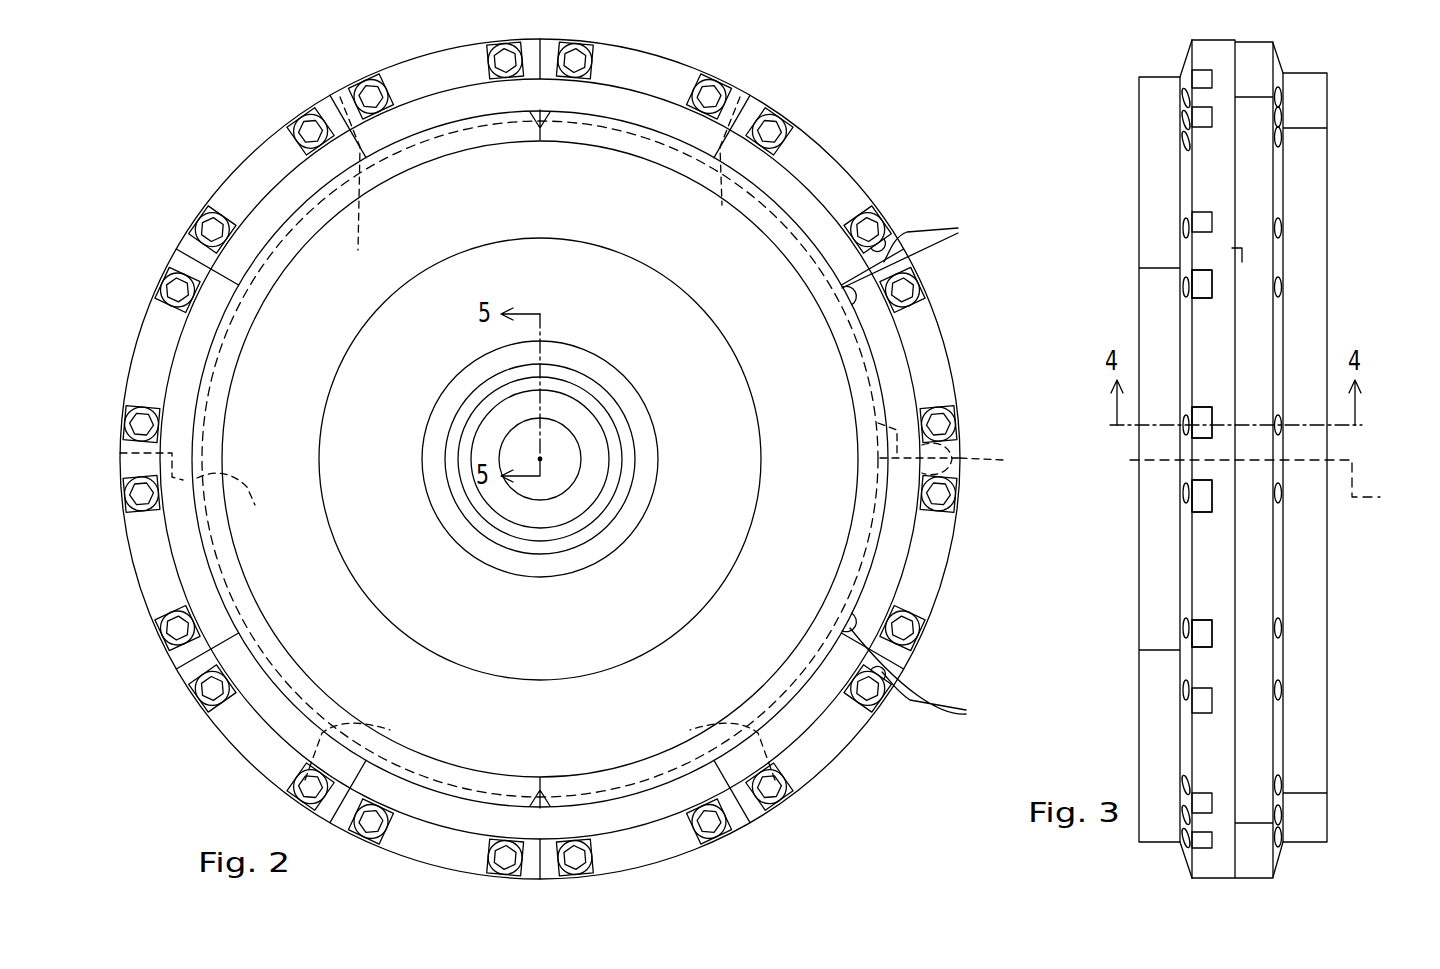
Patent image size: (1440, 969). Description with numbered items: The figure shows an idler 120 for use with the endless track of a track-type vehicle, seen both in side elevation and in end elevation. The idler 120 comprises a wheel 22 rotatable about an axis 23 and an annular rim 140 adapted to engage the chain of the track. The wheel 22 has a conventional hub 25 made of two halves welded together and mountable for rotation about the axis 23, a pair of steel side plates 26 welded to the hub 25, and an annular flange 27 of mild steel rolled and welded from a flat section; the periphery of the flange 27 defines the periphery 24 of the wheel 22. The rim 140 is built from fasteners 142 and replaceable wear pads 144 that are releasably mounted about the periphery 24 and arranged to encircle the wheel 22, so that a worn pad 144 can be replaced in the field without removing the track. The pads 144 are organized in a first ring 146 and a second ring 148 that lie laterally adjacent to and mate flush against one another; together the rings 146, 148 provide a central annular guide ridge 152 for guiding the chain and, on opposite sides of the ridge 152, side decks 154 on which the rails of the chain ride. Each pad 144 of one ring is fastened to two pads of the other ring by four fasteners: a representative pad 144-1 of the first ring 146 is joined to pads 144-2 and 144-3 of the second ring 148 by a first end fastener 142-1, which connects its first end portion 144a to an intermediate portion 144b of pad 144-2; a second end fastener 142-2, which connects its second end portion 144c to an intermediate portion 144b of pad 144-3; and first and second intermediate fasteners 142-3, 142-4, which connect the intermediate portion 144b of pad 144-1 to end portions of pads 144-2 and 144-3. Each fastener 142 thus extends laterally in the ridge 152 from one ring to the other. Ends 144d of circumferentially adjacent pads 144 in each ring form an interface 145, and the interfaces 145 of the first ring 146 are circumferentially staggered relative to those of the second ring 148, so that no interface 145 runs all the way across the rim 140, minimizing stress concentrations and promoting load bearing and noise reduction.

In FIG. 2, the wheel 22 is at (823, 541).
In FIG. 2, the axis 23 is at (541, 460).
In FIG. 3, the axis 23 is at (1272, 485).
In FIG. 2, the periphery 24 is at (881, 373).
In FIG. 2, the hub 25 is at (497, 497).
In FIG. 2, the side plates 26 is at (362, 652).
In FIG. 2, the flange 27 is at (810, 268).
In FIG. 3, the flange 27 is at (1328, 290).
In FIG. 2, the idler 120 is at (191, 140).
In FIG. 3, the idler 120 is at (1105, 124).
In FIG. 2, the annular rim 140 is at (967, 302).
In FIG. 3, the annular rim 140 is at (1348, 197).
In FIG. 2, the fasteners 142 is at (724, 79).
In FIG. 3, the fasteners 142 is at (1237, 459).
In FIG. 3, the first end fastener 142-1 is at (1197, 287).
In FIG. 3, the second end fastener 142-2 is at (1192, 634).
In FIG. 3, the first intermediate fastener 142-3 is at (1188, 433).
In FIG. 3, the second intermediate fastener 142-4 is at (1192, 497).
In FIG. 2, the wear pads 144 is at (258, 162).
In FIG. 3, the wear pad 144-1 is at (1240, 310).
In FIG. 3, the wear pad 144-2 is at (1285, 318).
In FIG. 3, the wear pad 144-3 is at (1260, 585).
In FIG. 3, the first end portion 144a is at (1200, 258).
In FIG. 3, the intermediate portion 144b is at (1223, 413).
In FIG. 3, the second end portion 144c is at (1200, 632).
In FIG. 2, the ends 144d is at (949, 468).
In FIG. 3, the ends 144d is at (1235, 250).
In FIG. 2, the interface 145 is at (546, 97).
In FIG. 3, the interface 145 is at (1305, 130).
In FIG. 2, the first ring 146 is at (932, 332).
In FIG. 3, the first ring 146 is at (1156, 869).
In FIG. 3, the second ring 148 is at (1310, 855).
In FIG. 3, the guide ridge 152 is at (1263, 60).
In FIG. 3, the side deck 154 is at (1157, 87).